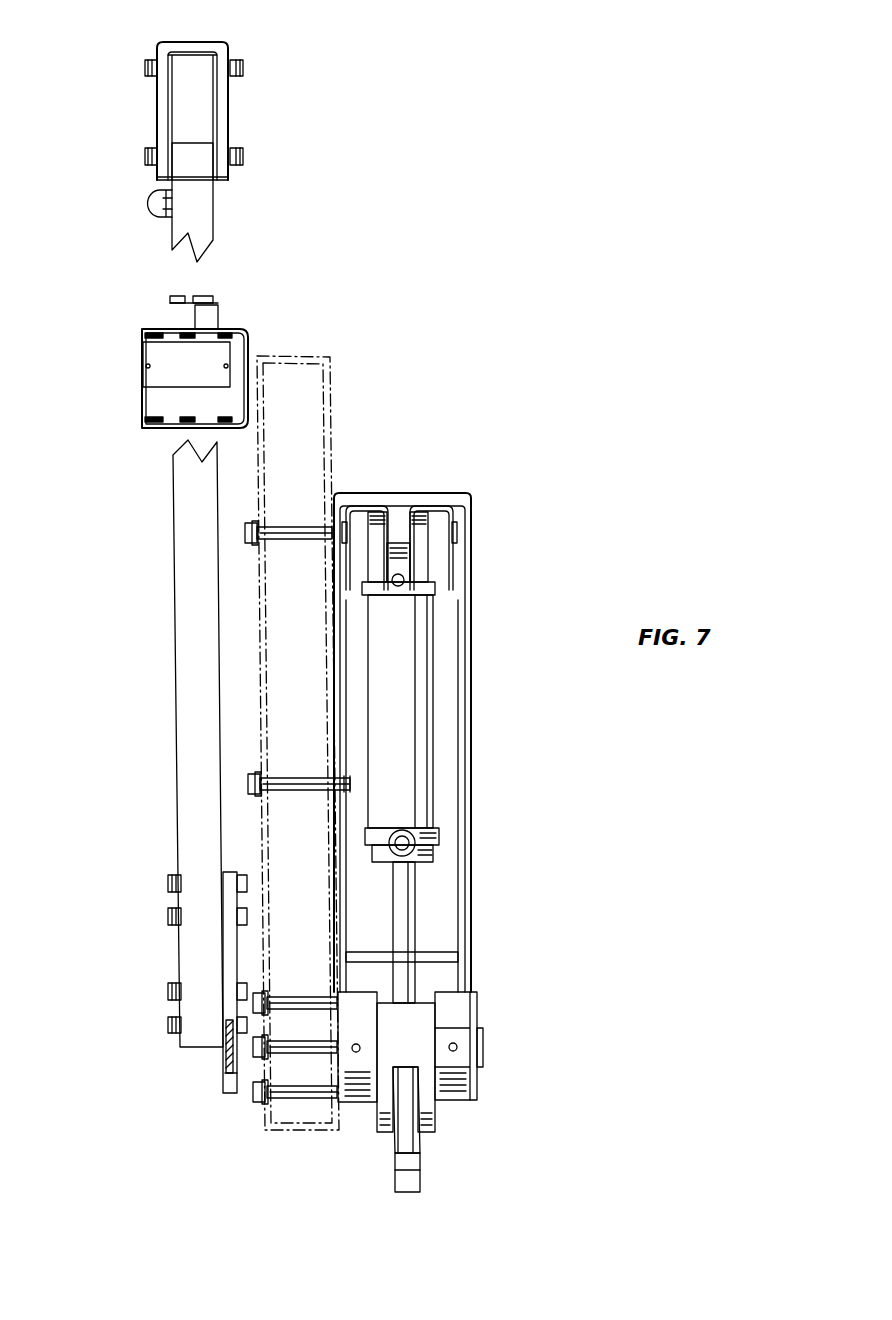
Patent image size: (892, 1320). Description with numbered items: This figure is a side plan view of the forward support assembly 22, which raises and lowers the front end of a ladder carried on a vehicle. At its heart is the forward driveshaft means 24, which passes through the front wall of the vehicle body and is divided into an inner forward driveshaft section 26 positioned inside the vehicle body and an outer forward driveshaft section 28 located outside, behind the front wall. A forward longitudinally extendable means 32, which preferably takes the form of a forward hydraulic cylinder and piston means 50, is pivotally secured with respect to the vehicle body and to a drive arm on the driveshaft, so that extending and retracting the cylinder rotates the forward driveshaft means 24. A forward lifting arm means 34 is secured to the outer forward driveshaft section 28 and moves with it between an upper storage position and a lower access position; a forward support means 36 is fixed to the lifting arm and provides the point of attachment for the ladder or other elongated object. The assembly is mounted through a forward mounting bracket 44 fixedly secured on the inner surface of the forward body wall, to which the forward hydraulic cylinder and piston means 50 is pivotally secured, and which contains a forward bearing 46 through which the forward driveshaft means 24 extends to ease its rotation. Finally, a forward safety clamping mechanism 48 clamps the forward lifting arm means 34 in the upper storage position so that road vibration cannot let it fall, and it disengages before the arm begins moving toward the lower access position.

The forward support assembly 22 is at (377, 484).
The forward driveshaft means 24 is at (460, 1055).
The inner forward driveshaft section 26 is at (462, 1037).
The outer forward driveshaft section 28 is at (252, 1072).
The forward longitudinally extendable means 32 is at (428, 678).
The forward lifting arm means 34 is at (212, 225).
The forward support means 36 is at (163, 43).
The forward mounting bracket 44 is at (437, 493).
The forward bearing 46 is at (450, 1085).
The forward safety clamping mechanism 48 is at (215, 313).
The forward hydraulic cylinder and piston means 50 is at (410, 912).